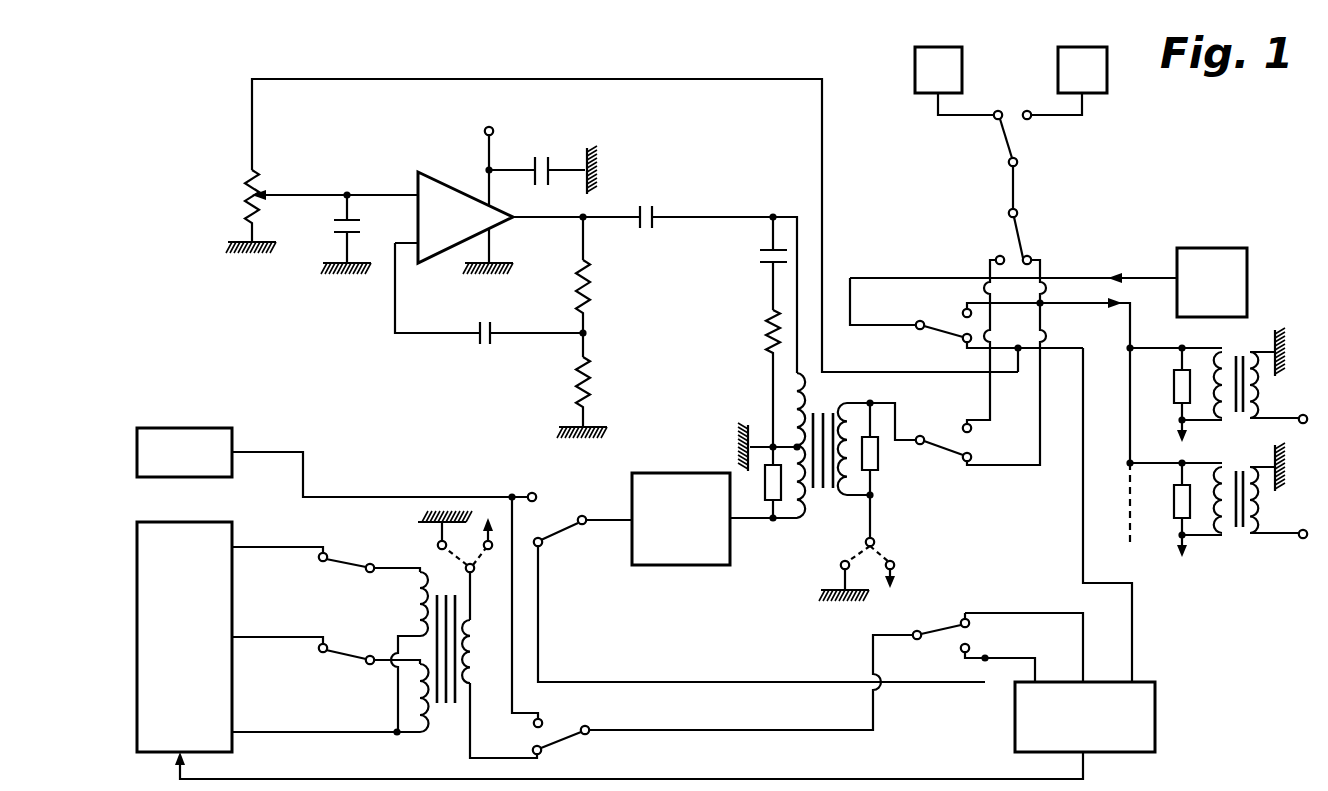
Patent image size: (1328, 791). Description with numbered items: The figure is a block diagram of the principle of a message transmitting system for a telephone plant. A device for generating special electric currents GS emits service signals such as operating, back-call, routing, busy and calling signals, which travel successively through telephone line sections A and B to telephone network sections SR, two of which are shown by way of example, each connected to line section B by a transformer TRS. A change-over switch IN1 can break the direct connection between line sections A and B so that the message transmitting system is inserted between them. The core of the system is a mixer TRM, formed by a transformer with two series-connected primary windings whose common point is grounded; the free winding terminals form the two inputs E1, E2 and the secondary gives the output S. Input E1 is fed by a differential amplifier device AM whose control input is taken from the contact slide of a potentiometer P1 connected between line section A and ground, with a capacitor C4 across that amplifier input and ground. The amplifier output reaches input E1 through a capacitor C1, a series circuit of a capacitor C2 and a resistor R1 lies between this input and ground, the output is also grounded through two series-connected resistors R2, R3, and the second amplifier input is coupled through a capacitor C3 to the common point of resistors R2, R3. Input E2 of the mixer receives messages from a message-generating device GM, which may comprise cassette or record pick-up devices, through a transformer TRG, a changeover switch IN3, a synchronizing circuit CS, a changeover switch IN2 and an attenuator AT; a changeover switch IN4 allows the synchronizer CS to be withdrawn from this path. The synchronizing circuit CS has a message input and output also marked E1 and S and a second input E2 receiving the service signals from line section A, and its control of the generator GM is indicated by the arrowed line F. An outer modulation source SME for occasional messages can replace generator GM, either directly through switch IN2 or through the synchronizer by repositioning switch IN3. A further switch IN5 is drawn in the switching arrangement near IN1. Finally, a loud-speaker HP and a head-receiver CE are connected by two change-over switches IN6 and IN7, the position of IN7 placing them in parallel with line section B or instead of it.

The potentiometer P1 is at (264, 178).
The capacitor C4 is at (337, 222).
The differential amplifier device AM is at (496, 230).
The first input E1 is at (418, 194).
The second input E2 is at (418, 243).
The capacitor C1 is at (650, 206).
The capacitor C2 is at (764, 251).
The capacitor C3 is at (484, 322).
The resistor R1 is at (766, 346).
The resistor R2 is at (592, 304).
The resistor R3 is at (592, 399).
The mixer TRM is at (832, 492).
The output S is at (872, 404).
The attenuator AT is at (714, 519).
The change-over switch IN1 is at (953, 342).
The changeover switch IN2 is at (560, 536).
The changeover switch IN3 is at (562, 740).
The changeover switch IN4 is at (956, 618).
The change-over switch IN5 is at (953, 460).
The change-over switch IN6 is at (1006, 138).
The change-over switch IN7 is at (1021, 240).
The outer modulation source SME is at (337, 573).
The message-generating device GM is at (278, 637).
The transformer TRG is at (450, 726).
The synchronizing circuit CS is at (1085, 717).
The arrowed line F is at (352, 780).
The head-receiver CE is at (954, 81).
The loud-speaker HP is at (1070, 81).
The telephone line section A is at (922, 278).
The telephone line section B is at (1133, 319).
The device for generating special electric currents GS is at (1212, 282).
The transformer TRS is at (1248, 440).
The telephone network section SR is at (1318, 398).